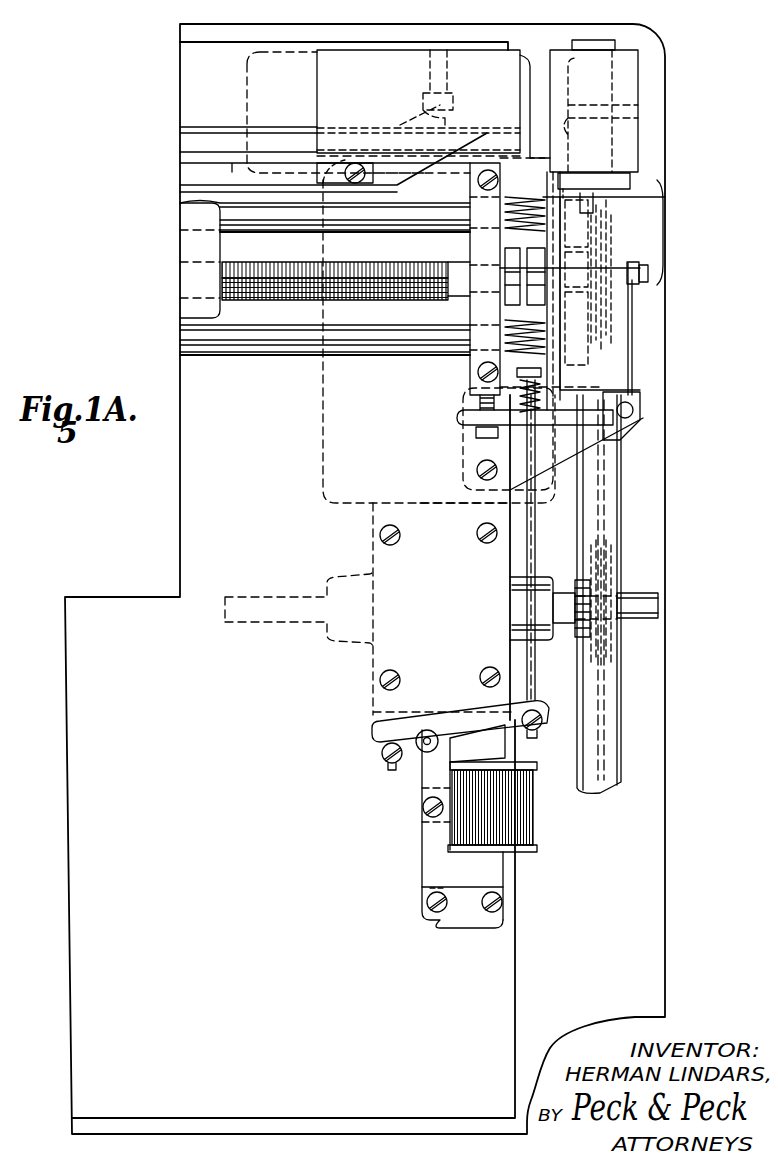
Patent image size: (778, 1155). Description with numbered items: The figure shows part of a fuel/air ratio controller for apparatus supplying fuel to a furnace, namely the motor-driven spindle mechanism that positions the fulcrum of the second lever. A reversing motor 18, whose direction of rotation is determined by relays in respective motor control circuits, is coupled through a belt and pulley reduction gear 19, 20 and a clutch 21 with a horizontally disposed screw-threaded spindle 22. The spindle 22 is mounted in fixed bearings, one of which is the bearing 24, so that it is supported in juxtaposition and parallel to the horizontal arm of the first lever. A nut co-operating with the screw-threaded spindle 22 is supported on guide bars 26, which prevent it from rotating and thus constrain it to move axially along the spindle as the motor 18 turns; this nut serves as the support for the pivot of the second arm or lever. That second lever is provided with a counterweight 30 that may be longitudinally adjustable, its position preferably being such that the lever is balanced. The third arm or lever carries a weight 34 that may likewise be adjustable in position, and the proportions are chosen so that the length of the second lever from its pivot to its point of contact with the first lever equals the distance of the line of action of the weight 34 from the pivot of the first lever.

The reversing motor 18 is at (448, 609).
The belt and pulley reduction gear 19 is at (602, 523).
The belt and pulley reduction gear 20 is at (600, 330).
The clutch 21 is at (532, 242).
The screw-threaded spindle 22 is at (222, 272).
The fixed bearing 24 is at (470, 360).
The guide bars 26 is at (205, 202).
The counterweight 30 is at (188, 217).
The weight 34 is at (372, 88).